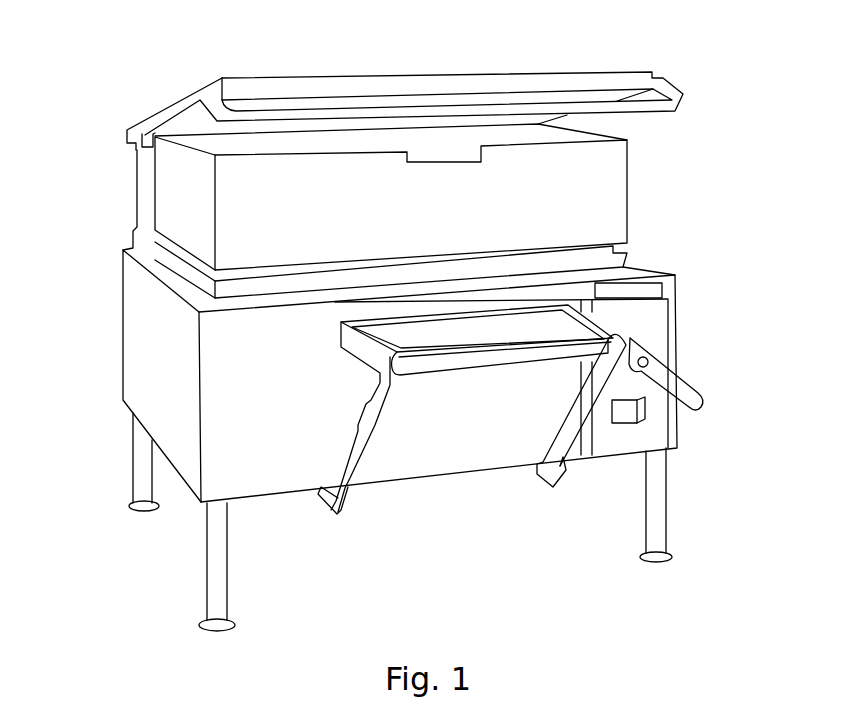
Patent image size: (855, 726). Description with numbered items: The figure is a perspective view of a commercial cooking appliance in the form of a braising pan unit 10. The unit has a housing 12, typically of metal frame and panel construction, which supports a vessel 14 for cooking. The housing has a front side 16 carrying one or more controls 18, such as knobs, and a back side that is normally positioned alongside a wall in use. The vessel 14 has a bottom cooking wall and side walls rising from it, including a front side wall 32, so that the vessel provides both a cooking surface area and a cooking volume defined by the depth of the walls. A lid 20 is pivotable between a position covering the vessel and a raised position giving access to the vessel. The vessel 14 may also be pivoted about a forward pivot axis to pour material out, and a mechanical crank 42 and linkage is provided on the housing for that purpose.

The braising pan unit 10 is at (706, 54).
The housing 12 is at (123, 249).
The vessel 14 is at (626, 192).
The front side 16 is at (515, 452).
The controls 18 is at (628, 446).
The lid 20 is at (311, 88).
The front side wall 32 is at (617, 223).
The mechanical crank 42 is at (688, 390).